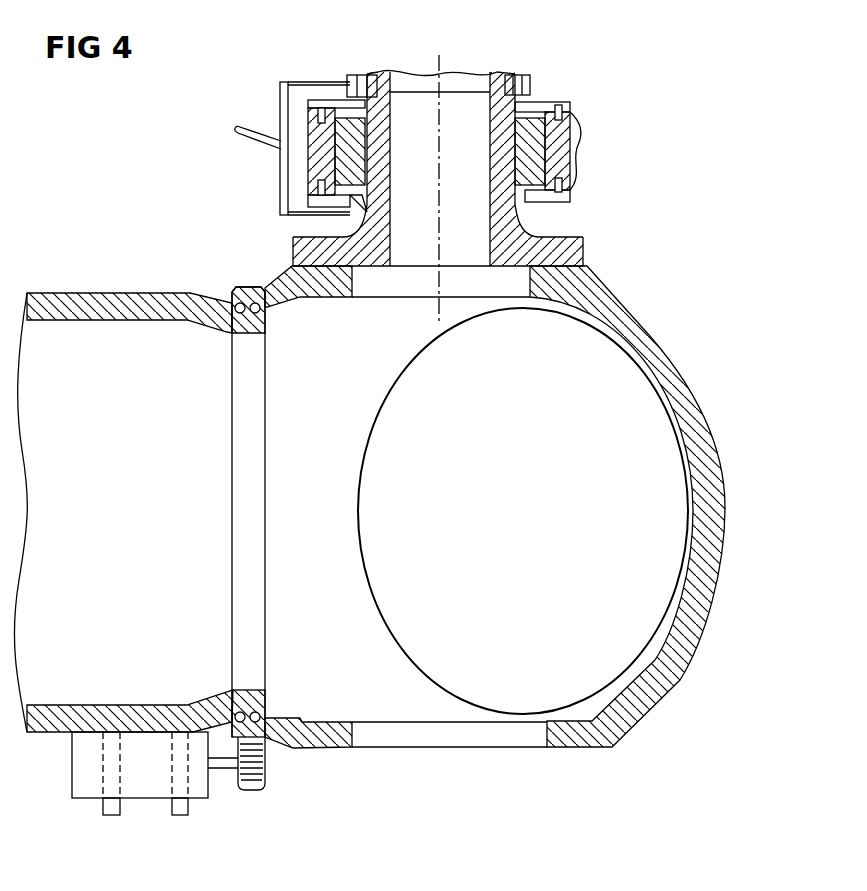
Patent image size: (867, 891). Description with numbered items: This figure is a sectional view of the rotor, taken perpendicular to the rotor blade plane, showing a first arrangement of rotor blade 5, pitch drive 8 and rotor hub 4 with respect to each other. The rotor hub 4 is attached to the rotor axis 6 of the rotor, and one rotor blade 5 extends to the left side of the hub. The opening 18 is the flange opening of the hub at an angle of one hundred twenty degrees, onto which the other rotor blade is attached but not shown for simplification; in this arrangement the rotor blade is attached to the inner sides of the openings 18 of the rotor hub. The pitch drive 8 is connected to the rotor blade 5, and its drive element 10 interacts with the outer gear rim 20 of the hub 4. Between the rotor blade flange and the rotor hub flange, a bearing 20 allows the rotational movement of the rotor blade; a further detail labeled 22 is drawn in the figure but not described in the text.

The rotor hub 4 is at (663, 678).
The rotor blade 5 is at (70, 302).
The rotor axis 6 is at (439, 56).
The pitch drive 8 is at (148, 782).
The drive element 10 is at (252, 788).
The opening 18 is at (617, 387).
The outer gear rim 20 is at (265, 735).
The seal 22 is at (265, 702).